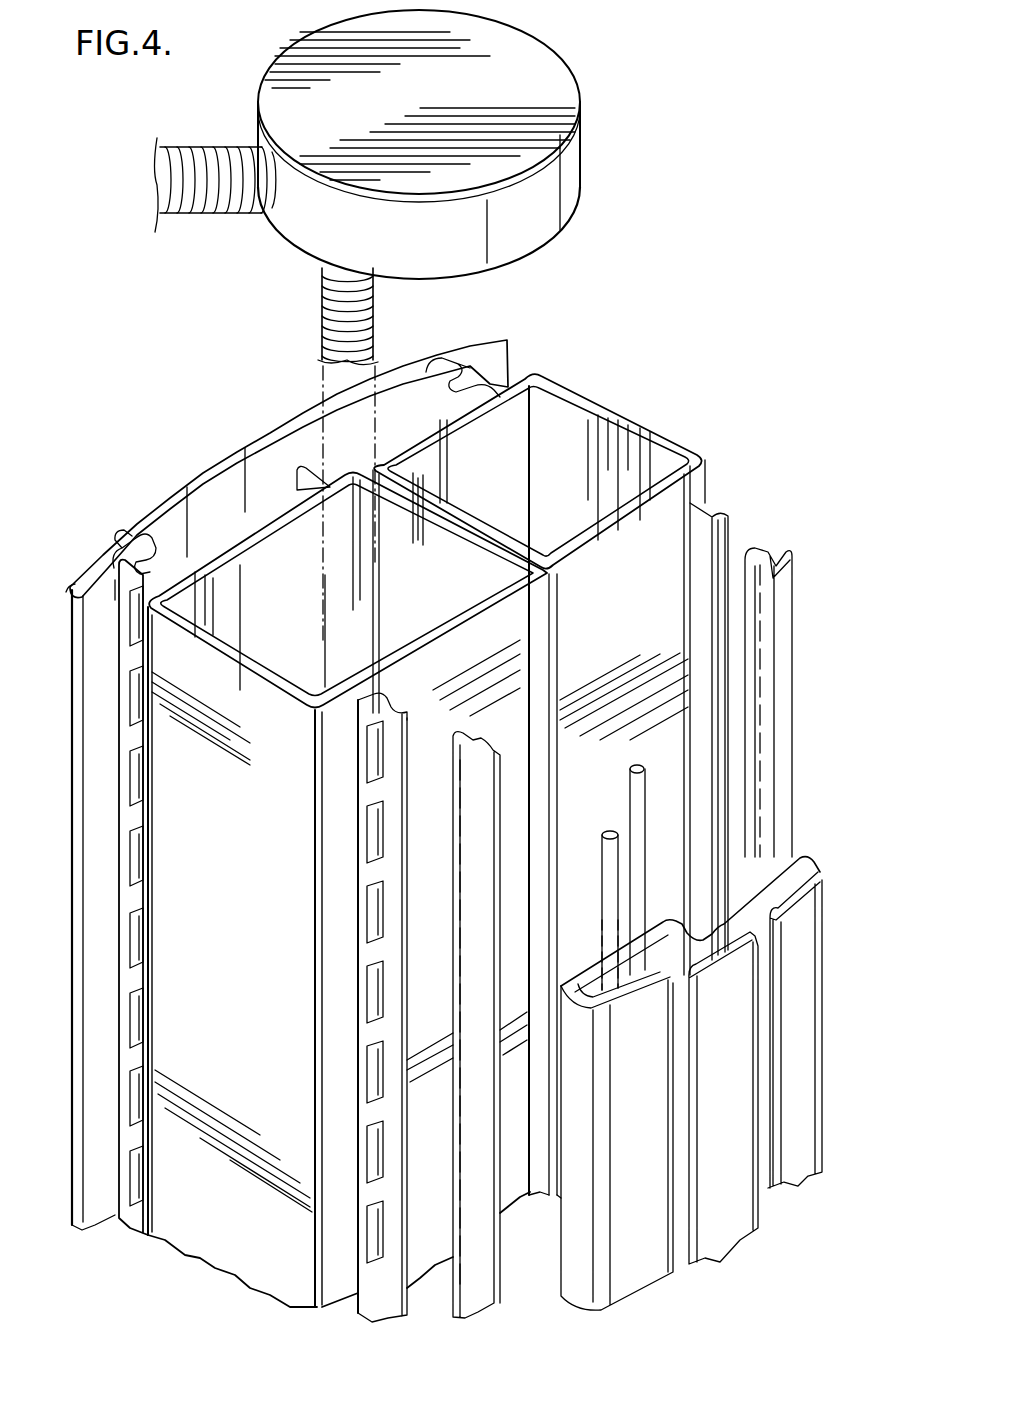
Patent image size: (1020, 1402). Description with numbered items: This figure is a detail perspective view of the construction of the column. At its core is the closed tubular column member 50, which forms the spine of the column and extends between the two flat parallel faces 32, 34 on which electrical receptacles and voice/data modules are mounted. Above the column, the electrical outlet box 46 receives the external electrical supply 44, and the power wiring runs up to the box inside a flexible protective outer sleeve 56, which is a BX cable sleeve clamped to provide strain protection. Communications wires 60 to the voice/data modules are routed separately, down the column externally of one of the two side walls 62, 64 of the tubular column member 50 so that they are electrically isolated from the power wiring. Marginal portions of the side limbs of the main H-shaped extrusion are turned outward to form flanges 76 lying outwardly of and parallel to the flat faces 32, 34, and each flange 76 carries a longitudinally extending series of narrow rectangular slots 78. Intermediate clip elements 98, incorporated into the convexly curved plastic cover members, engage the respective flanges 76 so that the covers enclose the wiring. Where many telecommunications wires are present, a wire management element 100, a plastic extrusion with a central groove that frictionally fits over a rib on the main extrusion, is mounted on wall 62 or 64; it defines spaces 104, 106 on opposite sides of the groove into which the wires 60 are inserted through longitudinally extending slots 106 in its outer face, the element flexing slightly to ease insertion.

The flat parallel face 32 is at (284, 734).
The flat parallel face 34 is at (640, 412).
The external electrical supply 44 is at (214, 152).
The electrical outlet box 46 is at (546, 92).
The tubular column member 50 is at (564, 356).
The flexible protective outer sleeve 56 is at (322, 330).
The wires 60 is at (632, 786).
The wall 62 is at (606, 582).
The wall 64 is at (228, 506).
The flange 76 is at (522, 352).
The narrow rectangular slot 78 is at (372, 910).
The intermediate clip element 98 is at (440, 364).
The wire management element 100 is at (832, 968).
The space 104 is at (802, 860).
The space / longitudinally extending slot 106 is at (712, 1254).